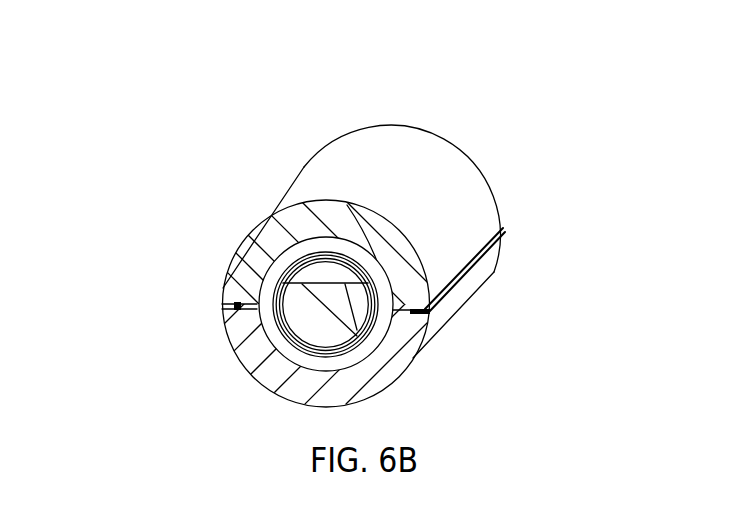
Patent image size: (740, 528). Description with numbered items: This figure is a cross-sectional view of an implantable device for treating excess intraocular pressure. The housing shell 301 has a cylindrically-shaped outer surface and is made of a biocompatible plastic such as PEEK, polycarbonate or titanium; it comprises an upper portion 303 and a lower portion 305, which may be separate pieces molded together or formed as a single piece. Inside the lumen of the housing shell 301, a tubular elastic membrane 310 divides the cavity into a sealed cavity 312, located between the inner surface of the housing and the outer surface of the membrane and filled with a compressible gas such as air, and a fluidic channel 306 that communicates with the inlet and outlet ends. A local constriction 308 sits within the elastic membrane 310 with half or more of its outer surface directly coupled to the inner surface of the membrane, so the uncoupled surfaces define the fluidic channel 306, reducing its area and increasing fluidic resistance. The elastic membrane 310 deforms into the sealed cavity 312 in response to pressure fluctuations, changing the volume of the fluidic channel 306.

The housing shell 301 is at (530, 208).
The upper portion 303 is at (458, 188).
The lower portion 305 is at (475, 285).
The fluidic channel 306 is at (319, 267).
The local constriction 308 is at (302, 302).
The tubular elastic membrane 310 is at (297, 256).
The sealed cavity 312 is at (277, 268).